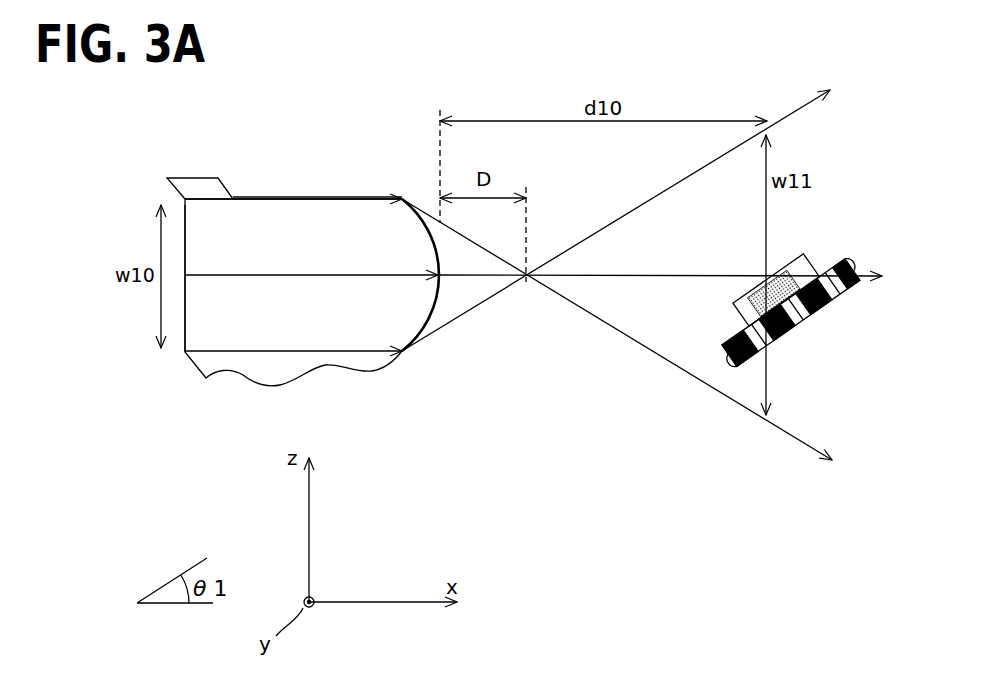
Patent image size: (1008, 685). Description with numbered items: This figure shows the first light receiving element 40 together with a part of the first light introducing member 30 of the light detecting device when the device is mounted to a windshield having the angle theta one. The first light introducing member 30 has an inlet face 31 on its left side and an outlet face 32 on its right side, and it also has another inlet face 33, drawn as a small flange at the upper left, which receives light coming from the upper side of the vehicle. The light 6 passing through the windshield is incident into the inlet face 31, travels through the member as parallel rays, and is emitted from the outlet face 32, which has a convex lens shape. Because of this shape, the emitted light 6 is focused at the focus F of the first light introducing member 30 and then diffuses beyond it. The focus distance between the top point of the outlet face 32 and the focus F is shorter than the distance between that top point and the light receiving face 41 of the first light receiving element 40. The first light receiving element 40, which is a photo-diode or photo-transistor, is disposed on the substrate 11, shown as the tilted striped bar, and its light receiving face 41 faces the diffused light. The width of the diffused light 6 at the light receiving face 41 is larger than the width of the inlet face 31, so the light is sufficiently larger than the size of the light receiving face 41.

The light 6 is at (348, 197).
The substrate 11 is at (822, 313).
The first light introducing member 30 is at (268, 198).
The inlet face 31 is at (183, 336).
The outlet face 32 is at (435, 308).
The another inlet face 33 is at (202, 178).
The first light receiving element 40 is at (757, 283).
The light receiving face 41 is at (735, 312).
The focus F is at (526, 283).